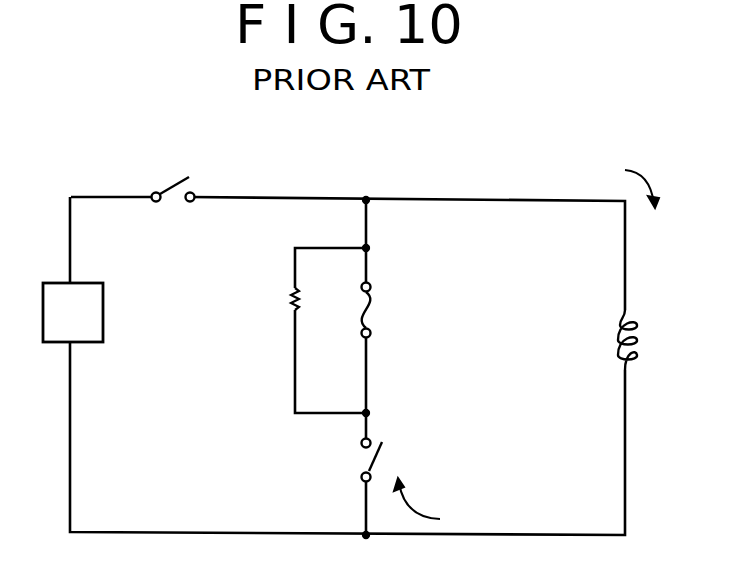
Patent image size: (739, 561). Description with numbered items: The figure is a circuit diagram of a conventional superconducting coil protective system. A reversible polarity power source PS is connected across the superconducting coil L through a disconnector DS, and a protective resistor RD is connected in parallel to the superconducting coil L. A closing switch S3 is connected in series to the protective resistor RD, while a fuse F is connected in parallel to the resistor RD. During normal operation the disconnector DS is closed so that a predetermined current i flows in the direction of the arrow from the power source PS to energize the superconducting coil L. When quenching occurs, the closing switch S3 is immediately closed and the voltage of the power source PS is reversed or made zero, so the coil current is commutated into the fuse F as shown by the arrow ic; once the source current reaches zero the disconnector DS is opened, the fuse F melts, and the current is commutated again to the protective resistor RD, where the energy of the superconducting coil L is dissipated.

The disconnector DS is at (164, 176).
The reversible polarity power source PS is at (73, 312).
The protective resistor RD is at (317, 300).
The fuse F is at (380, 310).
The closing switch S3 is at (391, 459).
The superconducting coil L is at (641, 340).
The current i is at (649, 185).
The commutated current ic is at (430, 498).